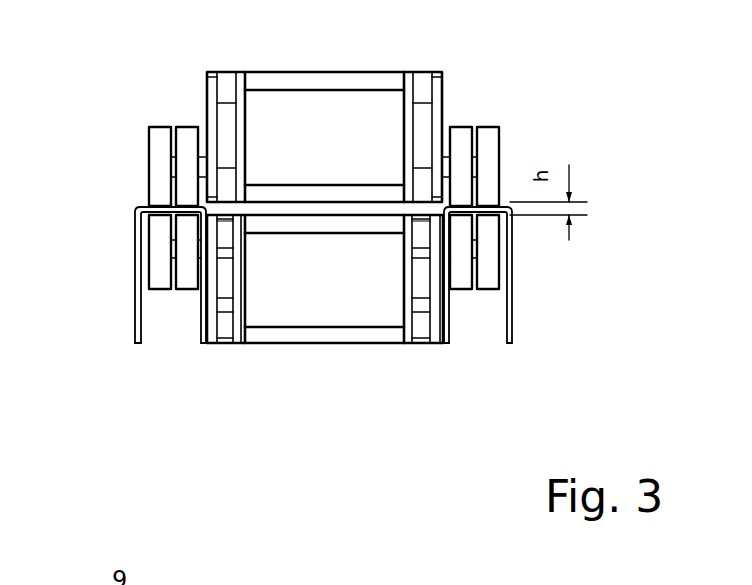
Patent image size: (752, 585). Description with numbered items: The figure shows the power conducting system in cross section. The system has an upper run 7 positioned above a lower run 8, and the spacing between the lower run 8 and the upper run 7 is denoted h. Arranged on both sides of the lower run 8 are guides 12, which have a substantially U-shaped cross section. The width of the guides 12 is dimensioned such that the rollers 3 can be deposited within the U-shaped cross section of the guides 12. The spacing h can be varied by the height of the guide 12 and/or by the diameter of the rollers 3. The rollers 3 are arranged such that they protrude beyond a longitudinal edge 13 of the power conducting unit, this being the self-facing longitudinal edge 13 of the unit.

The rollers 3 is at (270, 193).
The upper run 7 is at (390, 101).
The lower run 8 is at (351, 315).
The guides 12 is at (336, 275).
The longitudinal edge 13 is at (323, 307).